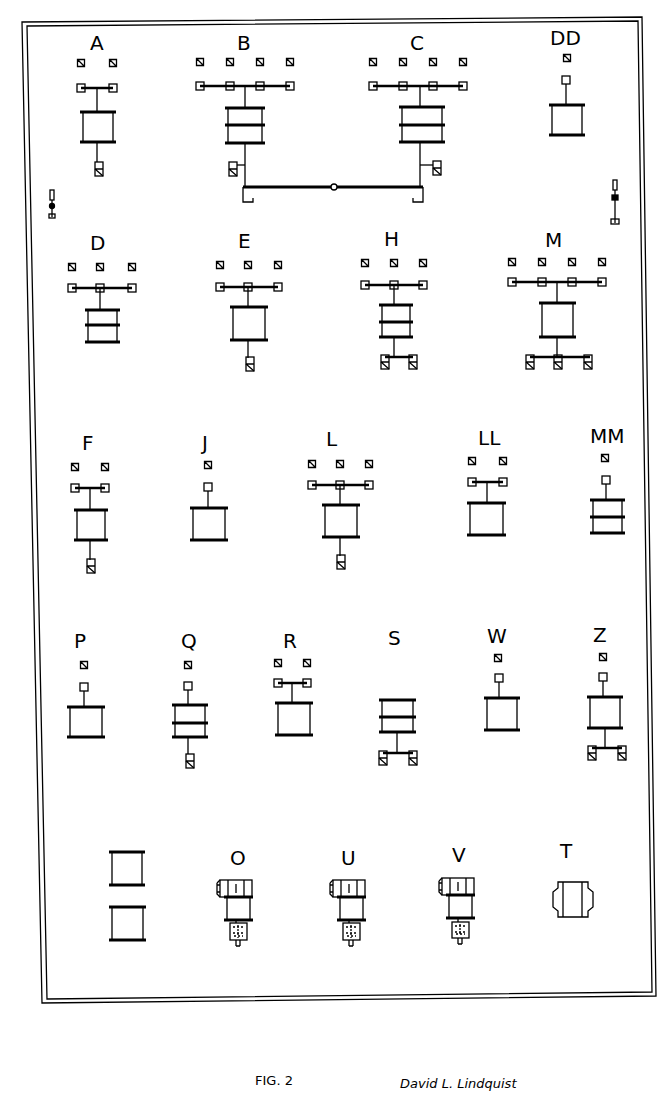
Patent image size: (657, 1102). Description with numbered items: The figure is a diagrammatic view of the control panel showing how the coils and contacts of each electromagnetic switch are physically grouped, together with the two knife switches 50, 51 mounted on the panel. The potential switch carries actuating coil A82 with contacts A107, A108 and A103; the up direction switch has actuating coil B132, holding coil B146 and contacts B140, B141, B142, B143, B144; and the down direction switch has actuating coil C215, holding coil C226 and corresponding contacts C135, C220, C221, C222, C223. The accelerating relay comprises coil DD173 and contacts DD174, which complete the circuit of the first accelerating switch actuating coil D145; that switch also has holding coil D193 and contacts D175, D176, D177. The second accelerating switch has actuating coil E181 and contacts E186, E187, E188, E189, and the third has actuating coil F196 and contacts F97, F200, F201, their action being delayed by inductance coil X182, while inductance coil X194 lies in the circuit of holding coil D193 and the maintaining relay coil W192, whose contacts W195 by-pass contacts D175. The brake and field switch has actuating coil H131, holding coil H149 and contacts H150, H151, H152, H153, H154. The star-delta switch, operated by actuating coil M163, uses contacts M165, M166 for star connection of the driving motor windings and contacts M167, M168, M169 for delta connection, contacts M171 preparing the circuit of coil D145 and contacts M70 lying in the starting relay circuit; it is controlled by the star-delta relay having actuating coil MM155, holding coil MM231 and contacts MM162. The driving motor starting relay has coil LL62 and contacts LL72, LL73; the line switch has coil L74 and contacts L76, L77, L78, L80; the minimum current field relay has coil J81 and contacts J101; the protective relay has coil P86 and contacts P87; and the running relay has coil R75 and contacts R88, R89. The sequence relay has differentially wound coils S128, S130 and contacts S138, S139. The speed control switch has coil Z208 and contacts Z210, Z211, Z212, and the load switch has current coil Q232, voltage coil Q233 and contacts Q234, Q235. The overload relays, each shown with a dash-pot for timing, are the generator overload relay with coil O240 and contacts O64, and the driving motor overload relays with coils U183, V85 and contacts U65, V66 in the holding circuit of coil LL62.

The knife switch 50 is at (55, 213).
The knife switch 51 is at (612, 208).
The potential switch contacts A107 is at (78, 83).
The potential switch contacts A108 is at (104, 82).
The potential switch actuating coil A82 is at (113, 120).
The potential switch contacts A103 is at (104, 146).
The up direction switch contacts B141 is at (195, 77).
The up direction switch contacts B142 is at (228, 73).
The up direction switch contacts B143 is at (263, 73).
The up direction switch contacts B144 is at (292, 72).
The up direction switch actuating coil B132 is at (262, 114).
The up direction switch holding coil B146 is at (262, 139).
The up direction switch contacts B140 is at (229, 168).
The down direction switch contacts C220 is at (372, 73).
The down direction switch contacts C221 is at (403, 73).
The down direction switch contacts C222 is at (438, 73).
The down direction switch contacts C223 is at (465, 73).
The down direction switch actuating coil C215 is at (442, 113).
The down direction switch holding coil C226 is at (442, 139).
The down direction switch contacts C135 is at (441, 168).
The accelerating relay contacts DD174 is at (570, 63).
The accelerating relay coil DD173 is at (582, 120).
The first accelerating switch contacts D176 is at (72, 282).
The first accelerating switch contacts D175 is at (103, 280).
The first accelerating switch contacts D177 is at (134, 278).
The first accelerating switch actuating coil D145 is at (117, 312).
The first accelerating switch holding coil D193 is at (117, 337).
The second accelerating switch contacts E188 is at (218, 278).
The second accelerating switch contacts E187 is at (252, 278).
The second accelerating switch contacts E189 is at (280, 277).
The second accelerating switch actuating coil E181 is at (265, 322).
The second accelerating switch contacts E186 is at (256, 362).
The brake and field switch contacts H153 is at (365, 275).
The brake and field switch contacts H152 is at (400, 275).
The brake and field switch contacts H154 is at (424, 274).
The brake and field switch actuating coil H131 is at (410, 312).
The brake and field switch holding coil H149 is at (410, 334).
The brake and field switch contacts H150 is at (381, 366).
The brake and field switch contacts H151 is at (417, 366).
The star-delta switch contacts M167 is at (538, 272).
The star-delta switch contacts M168 is at (510, 284).
The star-delta switch contacts M169 is at (575, 272).
The star-delta switch contacts M171 is at (603, 268).
The star-delta switch actuating coil M163 is at (573, 318).
The star-delta switch contacts M165 is at (532, 366).
The star-delta switch contacts M70 is at (558, 369).
The star-delta switch contacts M166 is at (592, 366).
The third accelerating switch contacts F200 is at (71, 484).
The third accelerating switch contacts F201 is at (107, 481).
The third accelerating switch actuating coil F196 is at (105, 523).
The third accelerating switch contacts F97 is at (95, 565).
The minimum current field relay contacts J101 is at (212, 470).
The minimum current field relay coil J81 is at (225, 523).
The driving motor line switch contacts L77 is at (310, 478).
The driving motor line switch contacts L78 is at (345, 475).
The driving motor line switch contacts L80 is at (372, 477).
The driving motor line switch actuating coil L74 is at (357, 520).
The driving motor line switch contacts L76 is at (345, 560).
The driving motor starting relay contacts LL73 is at (468, 472).
The driving motor starting relay contacts LL72 is at (508, 470).
The driving motor starting relay actuating coil LL62 is at (470, 518).
The star-delta relay contacts MM162 is at (603, 465).
The star-delta relay actuating coil MM155 is at (593, 508).
The star-delta relay holding coil MM231 is at (593, 525).
The protective relay contacts P87 is at (88, 671).
The protective relay actuating coil P86 is at (102, 721).
The load switch contacts Q235 is at (191, 671).
The load switch current coil Q232 is at (205, 713).
The load switch voltage coil Q233 is at (205, 734).
The load switch contacts Q234 is at (195, 763).
The running relay contacts R88 is at (276, 678).
The running relay contacts R89 is at (308, 678).
The running relay actuating coil R75 is at (310, 718).
The sequence relay coil S128 is at (413, 703).
The sequence relay coil S130 is at (413, 727).
The sequence relay contacts S138 is at (380, 762).
The sequence relay contacts S139 is at (416, 762).
The maintaining relay contacts W195 is at (494, 663).
The maintaining relay actuating coil W192 is at (517, 708).
The speed control switch contacts Z212 is at (607, 662).
The speed control switch actuating coil Z208 is at (590, 710).
The speed control switch contacts Z211 is at (588, 755).
The speed control switch contacts Z210 is at (625, 758).
The inductance coil X182 is at (142, 865).
The inductance coil X194 is at (143, 917).
The generator overload relay contacts O64 is at (252, 887).
The generator overload relay coil O240 is at (250, 912).
The driving motor overload relay contacts U65 is at (365, 884).
The driving motor overload relay coil U183 is at (363, 912).
The driving motor overload relay contacts V66 is at (474, 886).
The driving motor overload relay coil V85 is at (472, 910).